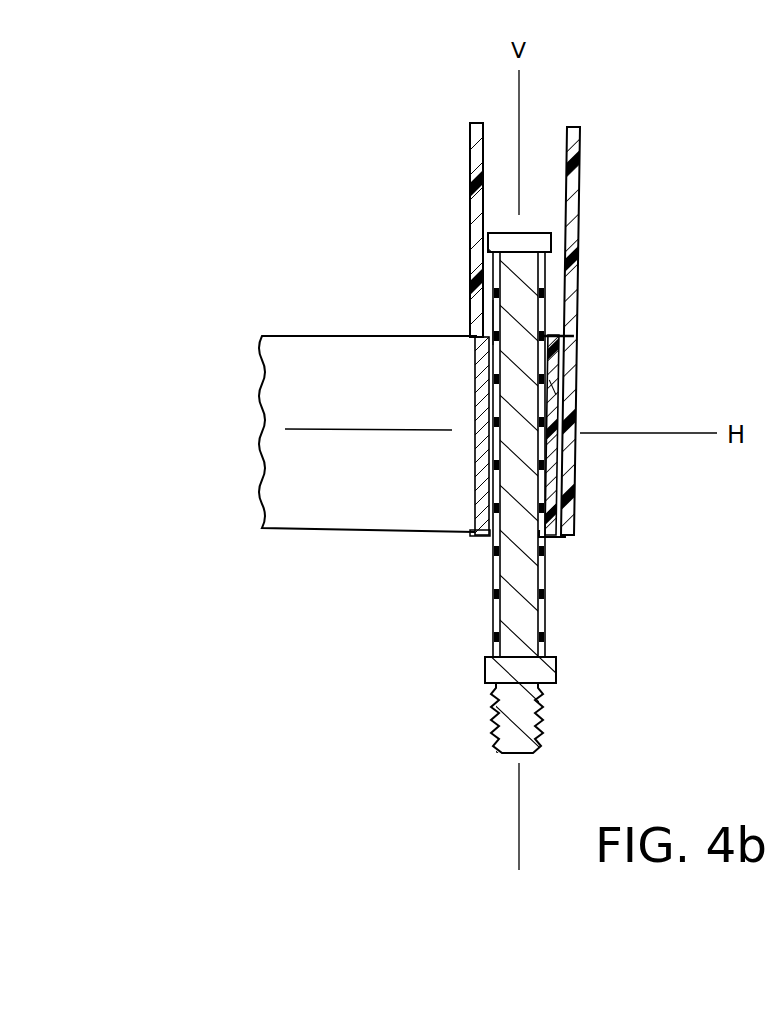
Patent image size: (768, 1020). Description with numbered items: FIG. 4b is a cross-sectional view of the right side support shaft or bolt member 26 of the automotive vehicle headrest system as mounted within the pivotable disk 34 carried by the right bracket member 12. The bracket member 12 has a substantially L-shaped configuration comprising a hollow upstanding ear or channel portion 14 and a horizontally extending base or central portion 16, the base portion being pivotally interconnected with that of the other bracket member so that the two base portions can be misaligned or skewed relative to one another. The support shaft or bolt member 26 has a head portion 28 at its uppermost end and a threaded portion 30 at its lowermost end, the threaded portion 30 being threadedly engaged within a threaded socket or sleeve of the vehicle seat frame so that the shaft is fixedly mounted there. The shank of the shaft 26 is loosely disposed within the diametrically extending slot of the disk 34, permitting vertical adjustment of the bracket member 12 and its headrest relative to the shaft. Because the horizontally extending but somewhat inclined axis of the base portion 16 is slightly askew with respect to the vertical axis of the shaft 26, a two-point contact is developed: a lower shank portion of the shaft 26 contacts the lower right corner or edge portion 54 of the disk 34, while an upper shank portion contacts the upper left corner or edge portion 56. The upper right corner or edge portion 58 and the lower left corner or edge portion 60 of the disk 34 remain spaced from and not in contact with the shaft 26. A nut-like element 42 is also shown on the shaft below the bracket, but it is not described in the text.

The bracket member 12 is at (572, 487).
The upstanding ear or channel portion 14 is at (580, 198).
The horizontally extending base or central portion 16 is at (360, 336).
The support shaft or bolt member 26 is at (538, 603).
The head portion 28 is at (530, 240).
The threaded portion 30 is at (538, 722).
The circular disk 34 is at (557, 406).
The nut 42 is at (557, 672).
The lower right corner or edge portion 54 is at (552, 540).
The upper left corner or edge portion 56 is at (502, 345).
The upper right corner or edge portion 58 is at (556, 346).
The lower left corner or edge portion 60 is at (473, 533).